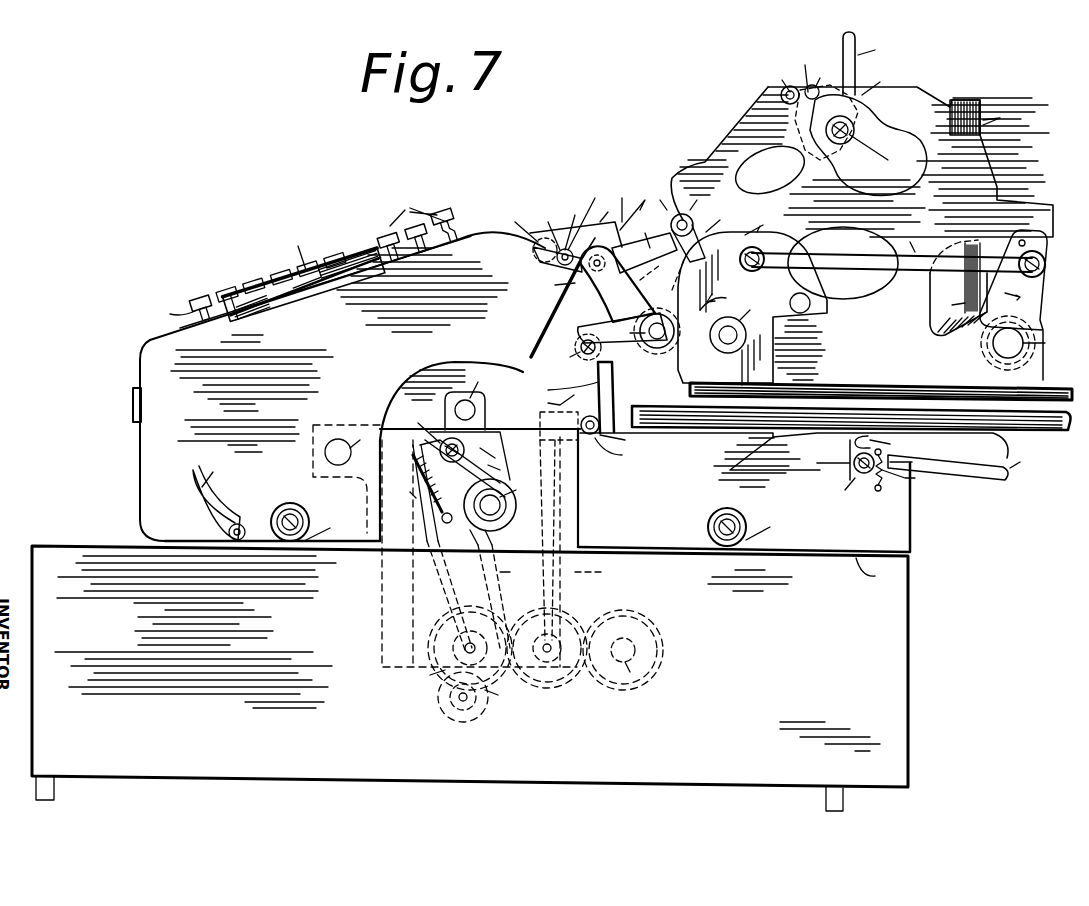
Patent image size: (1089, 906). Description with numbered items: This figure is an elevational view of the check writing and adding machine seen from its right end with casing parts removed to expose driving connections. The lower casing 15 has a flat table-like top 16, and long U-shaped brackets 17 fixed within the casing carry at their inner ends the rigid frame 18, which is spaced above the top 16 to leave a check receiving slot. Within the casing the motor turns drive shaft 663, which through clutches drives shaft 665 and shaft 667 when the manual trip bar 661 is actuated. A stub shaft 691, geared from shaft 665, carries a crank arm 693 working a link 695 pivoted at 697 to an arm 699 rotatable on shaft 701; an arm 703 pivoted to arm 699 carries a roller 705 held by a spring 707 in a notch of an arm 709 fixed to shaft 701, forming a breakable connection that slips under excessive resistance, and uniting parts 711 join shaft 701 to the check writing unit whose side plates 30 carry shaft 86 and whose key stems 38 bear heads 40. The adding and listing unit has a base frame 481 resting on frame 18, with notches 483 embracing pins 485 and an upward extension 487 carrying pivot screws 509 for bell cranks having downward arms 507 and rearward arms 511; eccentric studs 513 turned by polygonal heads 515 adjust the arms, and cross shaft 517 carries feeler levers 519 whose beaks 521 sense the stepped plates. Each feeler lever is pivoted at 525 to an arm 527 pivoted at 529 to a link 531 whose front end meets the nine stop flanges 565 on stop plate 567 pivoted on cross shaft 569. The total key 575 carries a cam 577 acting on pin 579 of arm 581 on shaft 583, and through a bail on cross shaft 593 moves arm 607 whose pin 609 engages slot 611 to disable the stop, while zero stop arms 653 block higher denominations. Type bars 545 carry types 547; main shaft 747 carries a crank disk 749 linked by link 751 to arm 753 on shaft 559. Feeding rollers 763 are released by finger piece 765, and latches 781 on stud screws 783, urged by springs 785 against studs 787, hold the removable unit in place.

The lower casing 15 is at (470, 678).
The table-like top 16 is at (870, 573).
The U-shaped brackets 17 is at (504, 552).
The rigid frame 18 is at (570, 392).
The side plates 30 is at (563, 297).
The key stems 38 is at (181, 309).
The key head 40 is at (320, 266).
The shaft 86 is at (348, 479).
The base frame 481 is at (852, 417).
The notches 483 is at (572, 421).
The pins 485 is at (541, 424).
The upward extension 487 is at (542, 400).
The downwardly extending arms 507 is at (565, 397).
The pivot screws 509 is at (568, 352).
The rearwardly extending arms 511 is at (622, 336).
The eccentric studs 513 is at (627, 440).
The polygonal heads 515 is at (623, 451).
The cross shaft 517 is at (642, 331).
The feeler levers 519 is at (617, 284).
The beak 521 is at (553, 270).
The pivot 525 is at (662, 275).
The arm 527 is at (643, 209).
The pivot 529 is at (695, 208).
The link 531 is at (707, 233).
The type bars 545 is at (957, 288).
The types 547 is at (989, 117).
The shaft 559 is at (1029, 343).
The nine stop flanges 565 is at (617, 199).
The stop plate 567 is at (571, 222).
The cross shaft 569 is at (522, 236).
The total and sub-total key 575 is at (870, 63).
The cam 577 is at (862, 150).
The pin 579 is at (820, 81).
The arm 581 is at (804, 69).
The shaft 583 is at (780, 83).
The cross shaft 593 is at (857, 127).
The arm 607 is at (576, 221).
The pin 609 is at (547, 236).
The slot 611 is at (583, 214).
The zero stop arms 653 is at (644, 251).
The trip bar 661 is at (304, 275).
The drive shaft 663 is at (623, 650).
The shaft 665 is at (547, 648).
The shaft 667 is at (446, 595).
The stub shaft 691 is at (482, 697).
The crank arm 693 is at (456, 648).
The link 695 is at (516, 544).
The pivot 697 is at (502, 503).
The arm 699 is at (474, 456).
The shaft 701 is at (429, 435).
The arm 703 is at (466, 557).
The roller 705 is at (436, 507).
The spring 707 is at (417, 489).
The arm 709 is at (469, 468).
The uniting parts 711 is at (470, 399).
The main shaft 747 is at (752, 308).
The crank disk 749 is at (821, 256).
The link 751 is at (892, 253).
The arm 753 is at (1013, 305).
The feeding rollers 763 is at (532, 524).
The finger piece 765 is at (219, 499).
The latches 781 is at (967, 465).
The stud screws 783 is at (853, 480).
The springs 785 is at (911, 470).
The studs 787 is at (887, 445).